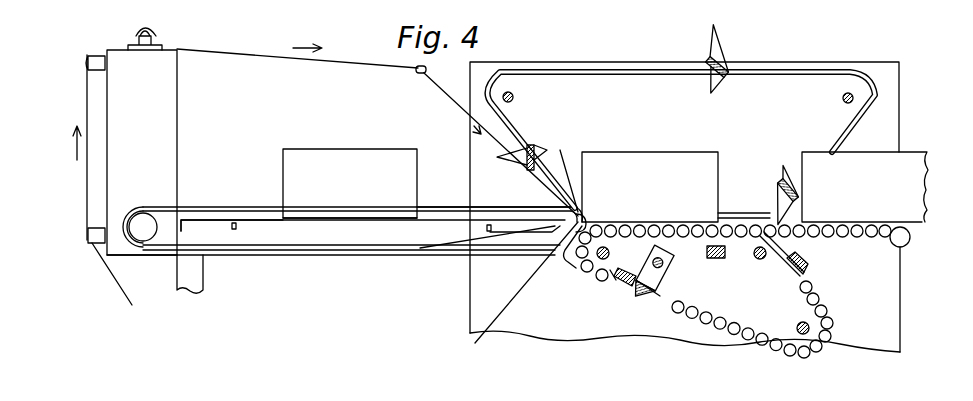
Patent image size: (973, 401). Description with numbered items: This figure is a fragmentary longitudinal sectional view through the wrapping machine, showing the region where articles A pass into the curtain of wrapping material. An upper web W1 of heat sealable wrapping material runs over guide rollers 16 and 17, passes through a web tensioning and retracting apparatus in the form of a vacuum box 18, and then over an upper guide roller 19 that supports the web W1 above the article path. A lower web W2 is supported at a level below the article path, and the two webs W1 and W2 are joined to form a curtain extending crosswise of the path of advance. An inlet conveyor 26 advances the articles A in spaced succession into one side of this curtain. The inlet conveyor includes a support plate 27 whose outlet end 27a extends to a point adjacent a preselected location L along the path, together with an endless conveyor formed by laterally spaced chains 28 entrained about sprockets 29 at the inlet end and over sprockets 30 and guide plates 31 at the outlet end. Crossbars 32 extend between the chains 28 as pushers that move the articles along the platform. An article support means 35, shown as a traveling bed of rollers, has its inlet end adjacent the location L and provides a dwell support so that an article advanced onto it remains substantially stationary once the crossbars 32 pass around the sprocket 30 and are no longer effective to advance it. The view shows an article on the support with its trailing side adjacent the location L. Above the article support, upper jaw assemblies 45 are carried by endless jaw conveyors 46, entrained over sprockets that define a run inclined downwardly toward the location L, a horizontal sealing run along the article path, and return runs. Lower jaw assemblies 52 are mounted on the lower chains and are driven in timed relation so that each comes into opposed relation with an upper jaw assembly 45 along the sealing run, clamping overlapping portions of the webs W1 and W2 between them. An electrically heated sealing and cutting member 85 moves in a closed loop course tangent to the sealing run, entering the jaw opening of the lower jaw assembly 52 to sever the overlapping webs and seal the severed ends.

The guide roller 16 is at (90, 246).
The guide roller 17 is at (92, 58).
The vacuum box 18 is at (178, 102).
The upper guide roller 19 is at (418, 74).
The inlet conveyor 26 is at (233, 204).
The support plate 27 is at (437, 224).
The outlet end 27a is at (560, 232).
The chains 28 is at (437, 204).
The sprockets 29 is at (143, 214).
The sprockets 30 is at (575, 215).
The guide plates 31 is at (500, 230).
The crossbars 32 is at (282, 206).
The article support means 35 is at (670, 234).
The upper jaw assemblies 45 is at (530, 144).
The endless jaw conveyors 46 is at (590, 68).
The lower jaw assemblies 52 is at (622, 284).
The sealing and cutting member 85 is at (652, 302).
The articles A is at (341, 168).
The preselected location L is at (574, 166).
The upper web W1 is at (456, 96).
The lower web W2 is at (518, 292).